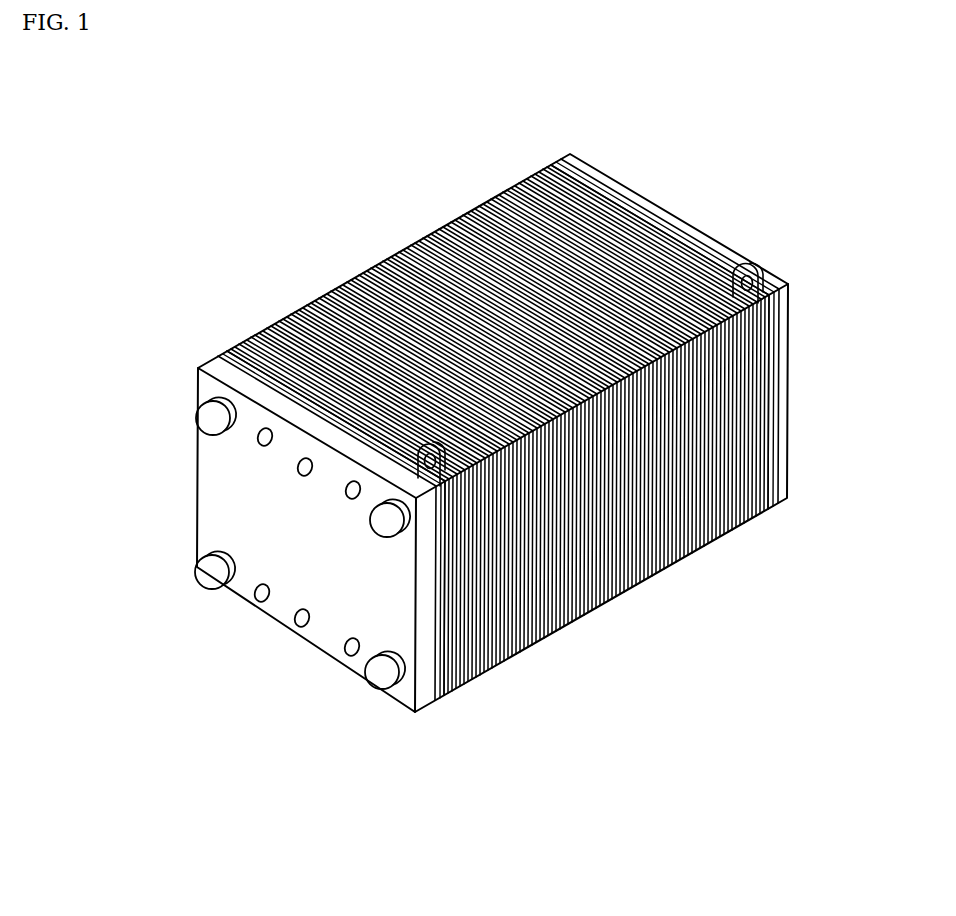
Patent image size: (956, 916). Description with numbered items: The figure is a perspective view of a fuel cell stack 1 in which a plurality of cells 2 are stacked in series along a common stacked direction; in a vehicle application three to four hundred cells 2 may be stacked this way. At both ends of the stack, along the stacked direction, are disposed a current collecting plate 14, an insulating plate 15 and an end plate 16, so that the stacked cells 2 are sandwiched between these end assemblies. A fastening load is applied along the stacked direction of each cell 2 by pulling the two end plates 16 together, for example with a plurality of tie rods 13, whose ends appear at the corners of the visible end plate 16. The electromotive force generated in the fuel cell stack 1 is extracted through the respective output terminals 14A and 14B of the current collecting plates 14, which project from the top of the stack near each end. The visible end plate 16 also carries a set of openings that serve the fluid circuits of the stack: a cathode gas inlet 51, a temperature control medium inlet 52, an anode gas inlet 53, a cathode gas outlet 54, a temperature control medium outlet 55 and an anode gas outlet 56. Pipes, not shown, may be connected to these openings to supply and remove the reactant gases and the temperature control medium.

The fuel cell stack 1 is at (647, 191).
The cell 2 is at (606, 608).
The tie rod 13 is at (381, 512).
The current collecting plate 14 is at (448, 696).
The output terminal 14A is at (432, 441).
The output terminal 14B is at (748, 262).
The insulating plate 15 is at (440, 702).
The end plate 16 is at (427, 707).
The cathode gas inlet 51 is at (347, 651).
The temperature control medium inlet 52 is at (298, 623).
The anode gas inlet 53 is at (259, 599).
The cathode gas outlet 54 is at (348, 486).
The temperature control medium outlet 55 is at (298, 462).
The anode gas outlet 56 is at (258, 432).